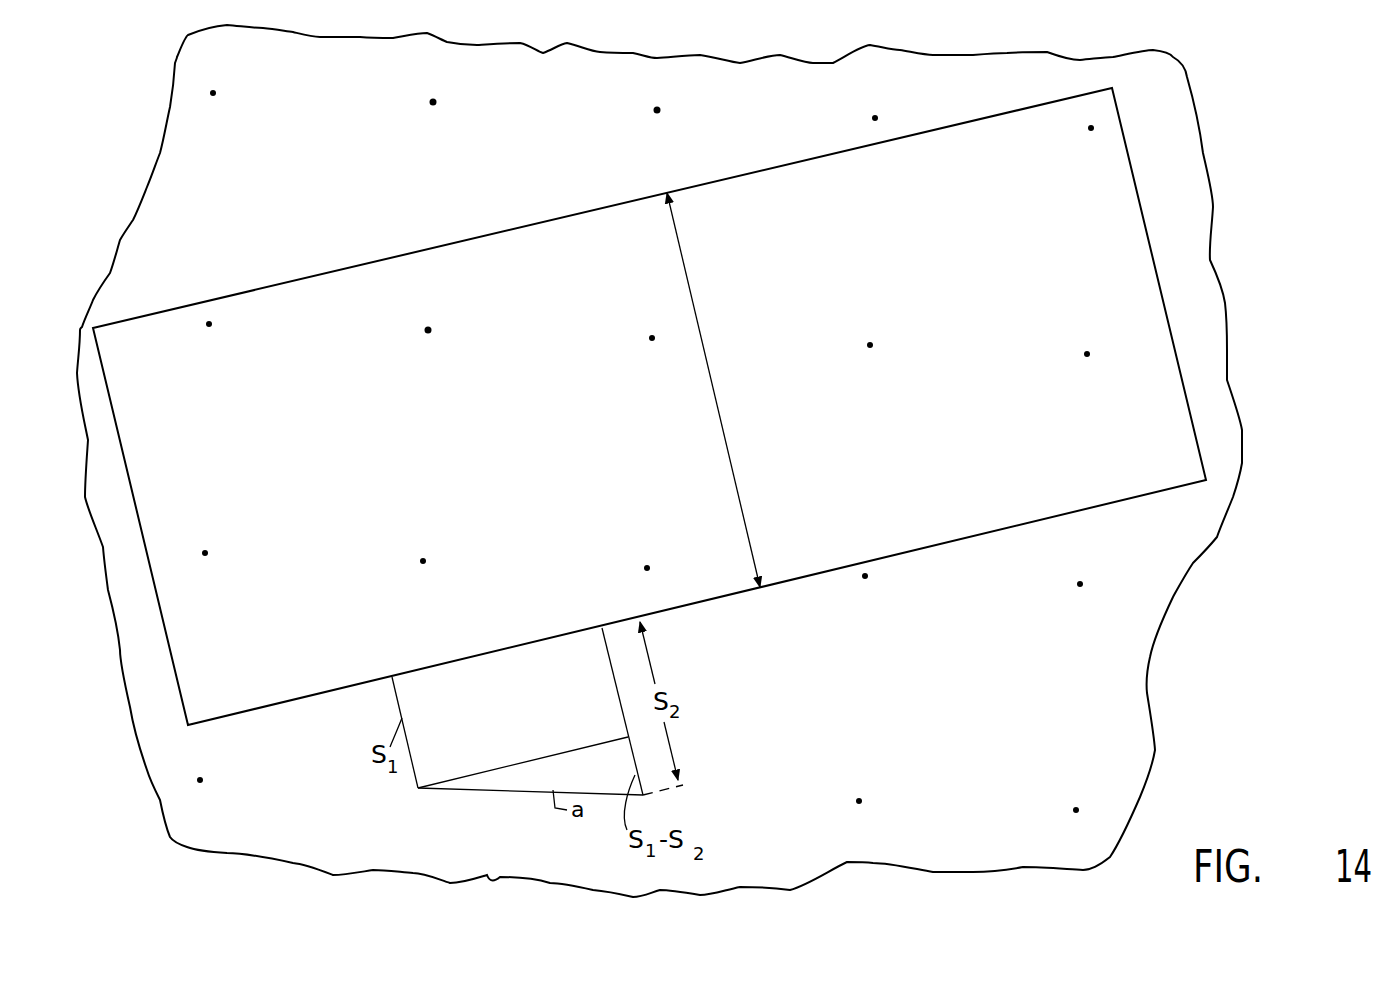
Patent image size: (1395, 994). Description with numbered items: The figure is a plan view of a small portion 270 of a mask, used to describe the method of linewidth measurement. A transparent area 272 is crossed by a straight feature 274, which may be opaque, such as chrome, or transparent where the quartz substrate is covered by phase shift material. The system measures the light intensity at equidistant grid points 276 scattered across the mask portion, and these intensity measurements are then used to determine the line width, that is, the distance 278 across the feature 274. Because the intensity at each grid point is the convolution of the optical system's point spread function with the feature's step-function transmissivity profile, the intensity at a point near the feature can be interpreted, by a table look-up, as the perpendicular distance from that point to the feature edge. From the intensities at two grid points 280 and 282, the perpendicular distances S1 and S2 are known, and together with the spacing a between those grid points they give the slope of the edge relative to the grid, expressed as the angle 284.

The small portion of a mask 270 is at (1154, 691).
The transparent area 272 is at (913, 688).
The feature 274 is at (953, 312).
The grid points 276 is at (657, 110).
The distance across feature 278 is at (718, 407).
The grid point 280 is at (418, 792).
The grid point 282 is at (643, 796).
The angle 284 is at (483, 787).